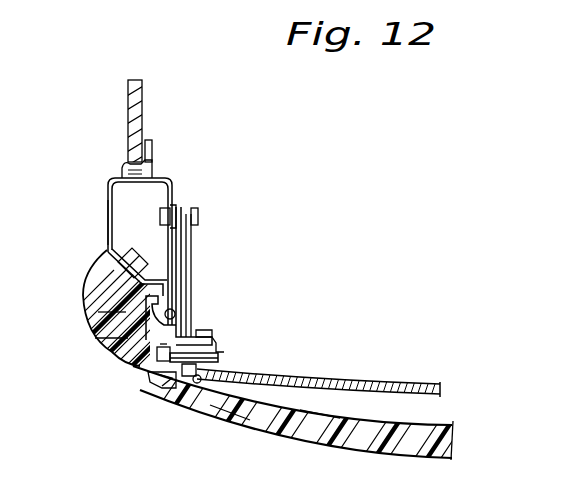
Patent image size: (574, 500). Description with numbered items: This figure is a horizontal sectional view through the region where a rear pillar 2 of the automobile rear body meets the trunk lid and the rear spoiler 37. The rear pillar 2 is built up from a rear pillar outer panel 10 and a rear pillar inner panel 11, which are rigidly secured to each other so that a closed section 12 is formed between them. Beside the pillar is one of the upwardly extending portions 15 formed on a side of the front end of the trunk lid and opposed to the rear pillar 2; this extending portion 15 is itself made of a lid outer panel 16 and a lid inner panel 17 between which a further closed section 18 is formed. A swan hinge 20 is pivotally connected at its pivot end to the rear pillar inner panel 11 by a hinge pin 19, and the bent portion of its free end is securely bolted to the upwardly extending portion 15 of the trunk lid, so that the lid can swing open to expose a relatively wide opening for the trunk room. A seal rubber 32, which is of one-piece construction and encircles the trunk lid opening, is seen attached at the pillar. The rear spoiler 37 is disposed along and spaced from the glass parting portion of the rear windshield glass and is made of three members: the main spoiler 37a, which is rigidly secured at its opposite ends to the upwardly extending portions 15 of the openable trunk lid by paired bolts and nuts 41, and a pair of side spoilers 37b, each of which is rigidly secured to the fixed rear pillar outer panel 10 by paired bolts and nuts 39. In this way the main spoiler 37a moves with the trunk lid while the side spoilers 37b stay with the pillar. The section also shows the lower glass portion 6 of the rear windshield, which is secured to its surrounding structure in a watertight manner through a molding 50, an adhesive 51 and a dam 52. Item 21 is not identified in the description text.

The rear pillar 2 is at (93, 192).
The lower glass portion 6 is at (323, 392).
The rear pillar outer panel 10 is at (109, 218).
The rear pillar inner panel 11 is at (170, 178).
The closed section 12 is at (123, 190).
The upwardly extending portion 15 is at (233, 339).
The lid outer panel 16 is at (150, 357).
The lid inner panel 17 is at (112, 311).
The closed section 18 is at (118, 337).
The hinge pin 19 is at (198, 216).
The swan hinge 20 is at (188, 256).
The foot 21 is at (208, 340).
The seal rubber 32 is at (176, 300).
The rear spoiler 37 is at (473, 449).
The main spoiler 37a is at (233, 428).
The side spoiler 37b is at (97, 262).
The bolts and nuts 39 is at (112, 282).
The bolts and nuts 41 is at (160, 388).
The molding 50 is at (190, 377).
The adhesive 51 is at (200, 384).
The dam 52 is at (230, 368).